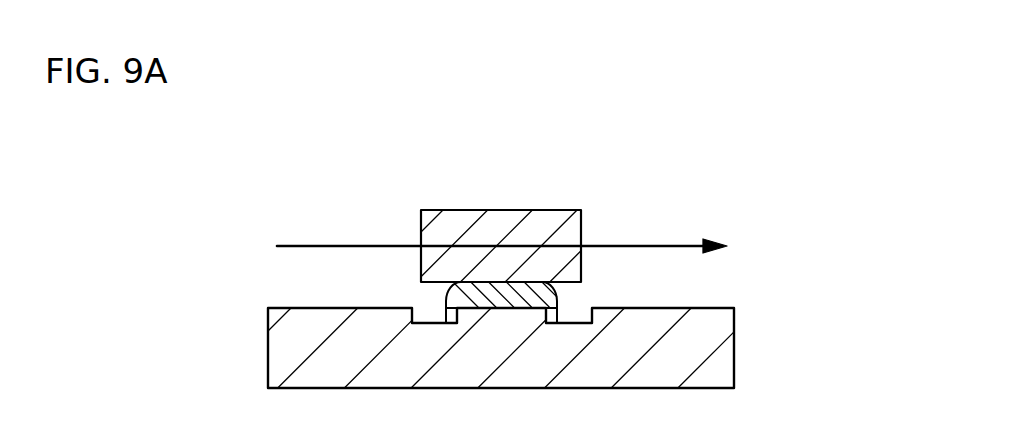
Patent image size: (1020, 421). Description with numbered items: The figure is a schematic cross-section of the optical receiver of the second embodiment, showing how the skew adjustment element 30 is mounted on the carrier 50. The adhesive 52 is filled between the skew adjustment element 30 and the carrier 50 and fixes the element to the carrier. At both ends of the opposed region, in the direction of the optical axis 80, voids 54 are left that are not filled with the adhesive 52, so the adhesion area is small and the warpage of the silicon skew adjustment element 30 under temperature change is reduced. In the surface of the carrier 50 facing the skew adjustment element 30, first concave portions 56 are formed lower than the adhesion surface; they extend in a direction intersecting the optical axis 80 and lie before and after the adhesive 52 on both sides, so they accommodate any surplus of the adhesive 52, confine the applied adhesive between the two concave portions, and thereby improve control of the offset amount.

The skew adjustment element 30 is at (491, 210).
The carrier 50 is at (736, 350).
The adhesive 52 is at (513, 292).
The voids 54 is at (420, 266).
The first concave portions 56 is at (440, 315).
The optical axis 80 is at (352, 245).